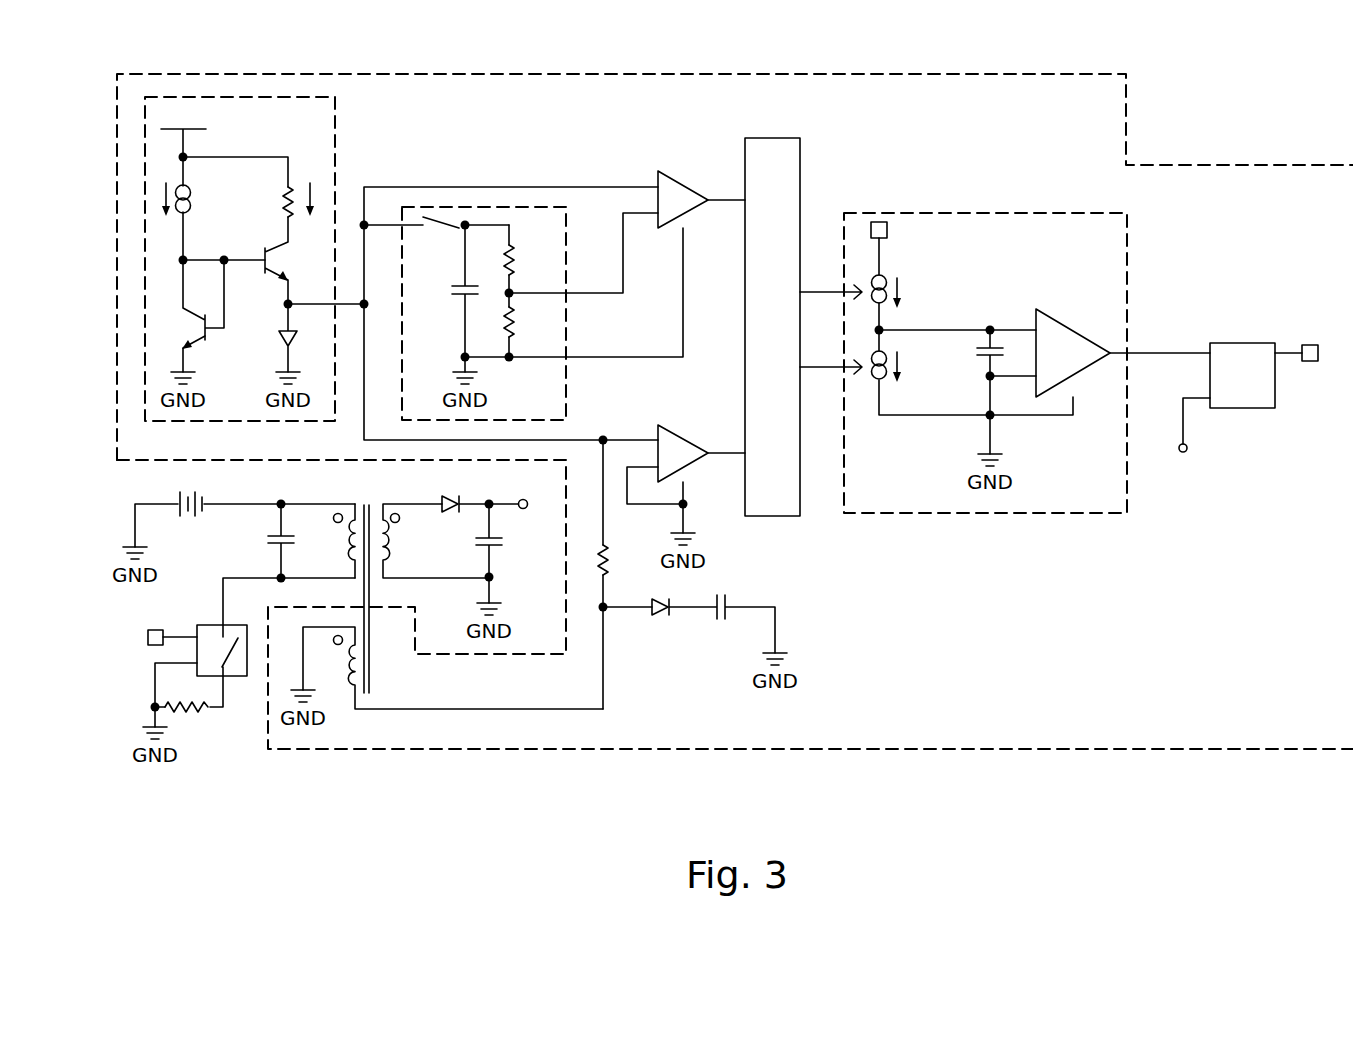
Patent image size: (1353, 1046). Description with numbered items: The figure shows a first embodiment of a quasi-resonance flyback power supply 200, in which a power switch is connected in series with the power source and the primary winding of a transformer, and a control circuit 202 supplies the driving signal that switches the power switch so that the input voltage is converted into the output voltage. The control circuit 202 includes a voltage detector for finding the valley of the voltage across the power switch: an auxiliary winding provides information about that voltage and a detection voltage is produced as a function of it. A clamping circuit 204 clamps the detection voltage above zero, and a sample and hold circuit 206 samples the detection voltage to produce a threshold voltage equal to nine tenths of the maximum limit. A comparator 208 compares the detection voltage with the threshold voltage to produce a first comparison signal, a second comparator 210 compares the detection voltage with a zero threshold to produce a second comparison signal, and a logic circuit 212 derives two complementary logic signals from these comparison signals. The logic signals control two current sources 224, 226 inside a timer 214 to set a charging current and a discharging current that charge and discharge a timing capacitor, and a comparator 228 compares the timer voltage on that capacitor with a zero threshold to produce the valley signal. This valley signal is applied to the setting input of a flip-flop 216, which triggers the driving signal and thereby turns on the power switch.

The quasi-resonance flyback power supply 200 is at (1288, 132).
The control circuit 202 is at (1106, 750).
The clamping circuit 204 is at (335, 146).
The sample and hold circuit 206 is at (482, 207).
The comparator 208 is at (678, 175).
The comparator 210 is at (677, 429).
The logic circuit 212 is at (768, 516).
The timer 214 is at (1027, 336).
The flip-flop 216 is at (1235, 342).
The current source 224 is at (906, 270).
The current source 226 is at (871, 390).
The comparator 228 is at (1066, 321).